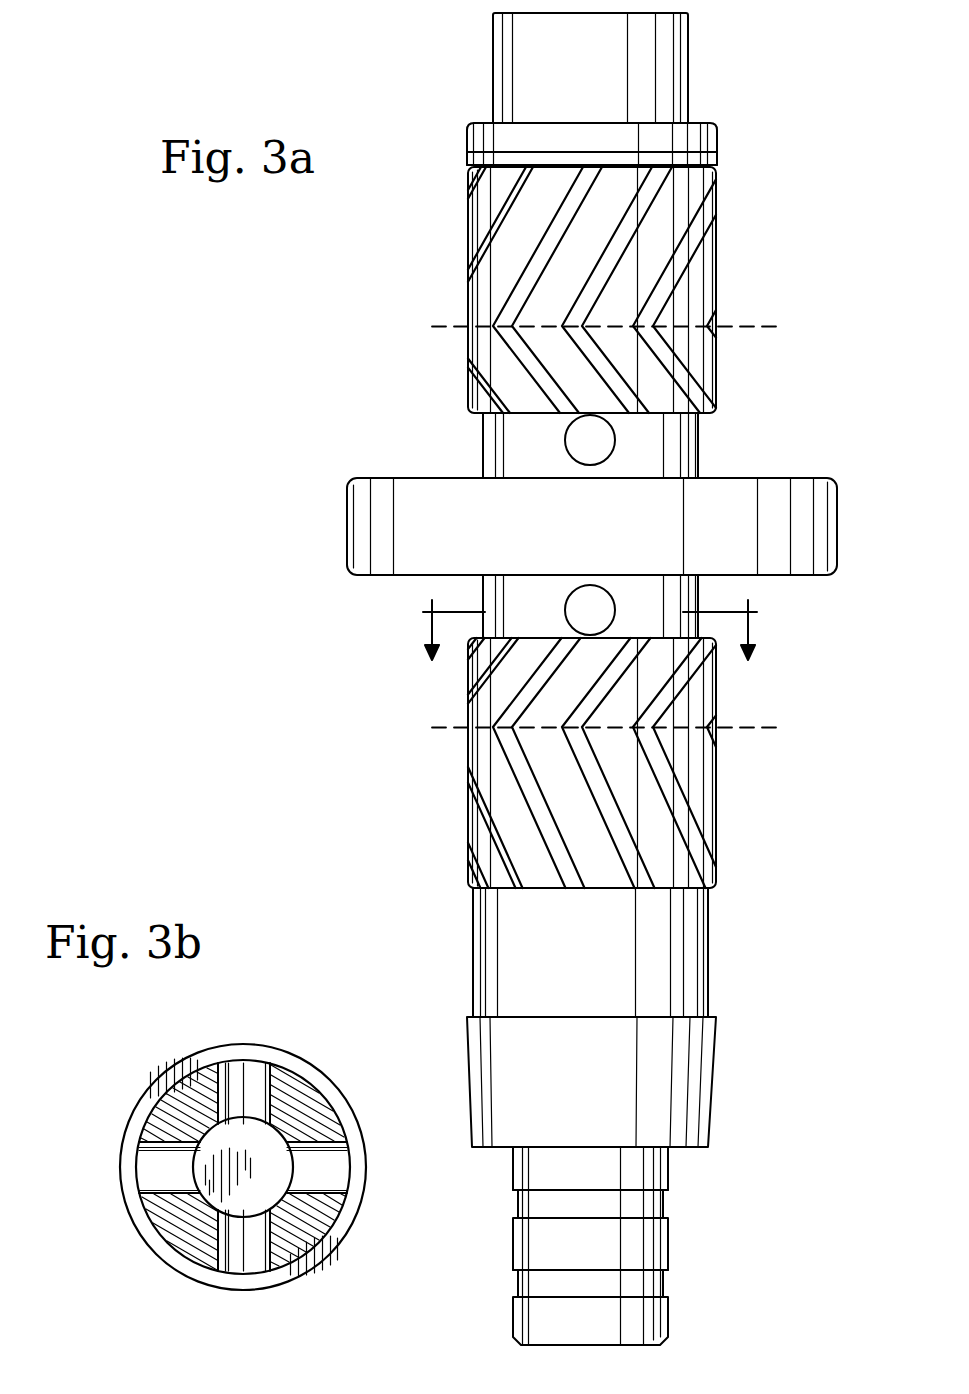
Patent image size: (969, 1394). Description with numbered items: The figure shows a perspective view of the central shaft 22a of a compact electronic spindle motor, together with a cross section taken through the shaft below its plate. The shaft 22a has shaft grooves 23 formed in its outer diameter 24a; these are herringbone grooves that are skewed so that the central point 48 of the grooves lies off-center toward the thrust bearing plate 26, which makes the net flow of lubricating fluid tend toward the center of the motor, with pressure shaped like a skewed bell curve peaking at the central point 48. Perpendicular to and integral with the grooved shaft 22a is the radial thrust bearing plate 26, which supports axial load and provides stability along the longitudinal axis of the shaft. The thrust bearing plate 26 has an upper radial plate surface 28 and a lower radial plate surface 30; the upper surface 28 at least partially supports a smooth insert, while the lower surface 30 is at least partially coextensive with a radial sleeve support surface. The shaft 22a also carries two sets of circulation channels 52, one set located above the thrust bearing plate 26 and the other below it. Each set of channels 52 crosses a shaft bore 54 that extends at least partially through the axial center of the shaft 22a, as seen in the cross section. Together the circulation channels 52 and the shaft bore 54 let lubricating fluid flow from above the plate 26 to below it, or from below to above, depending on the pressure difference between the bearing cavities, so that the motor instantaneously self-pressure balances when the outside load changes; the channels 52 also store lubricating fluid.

In FIG. 3A, the central shaft 22a is at (799, 282).
In FIG. 3B, the central shaft 22a is at (126, 1076).
In FIG. 3A, the shaft grooves 23 is at (703, 256).
In FIG. 3A, the outer diameter 24a is at (724, 856).
In FIG. 3B, the outer diameter 24a is at (343, 1090).
In FIG. 3A, the radial thrust bearing plate 26 is at (360, 523).
In FIG. 3A, the upper radial plate surface 28 is at (390, 478).
In FIG. 3A, the lower radial plate surface 30 is at (385, 576).
In FIG. 3A, the central point 48 is at (438, 333).
In FIG. 3A, the circulation channels 52 is at (604, 430).
In FIG. 3B, the circulation channels 52 is at (267, 1090).
In FIG. 3B, the shaft bore 54 is at (207, 1207).